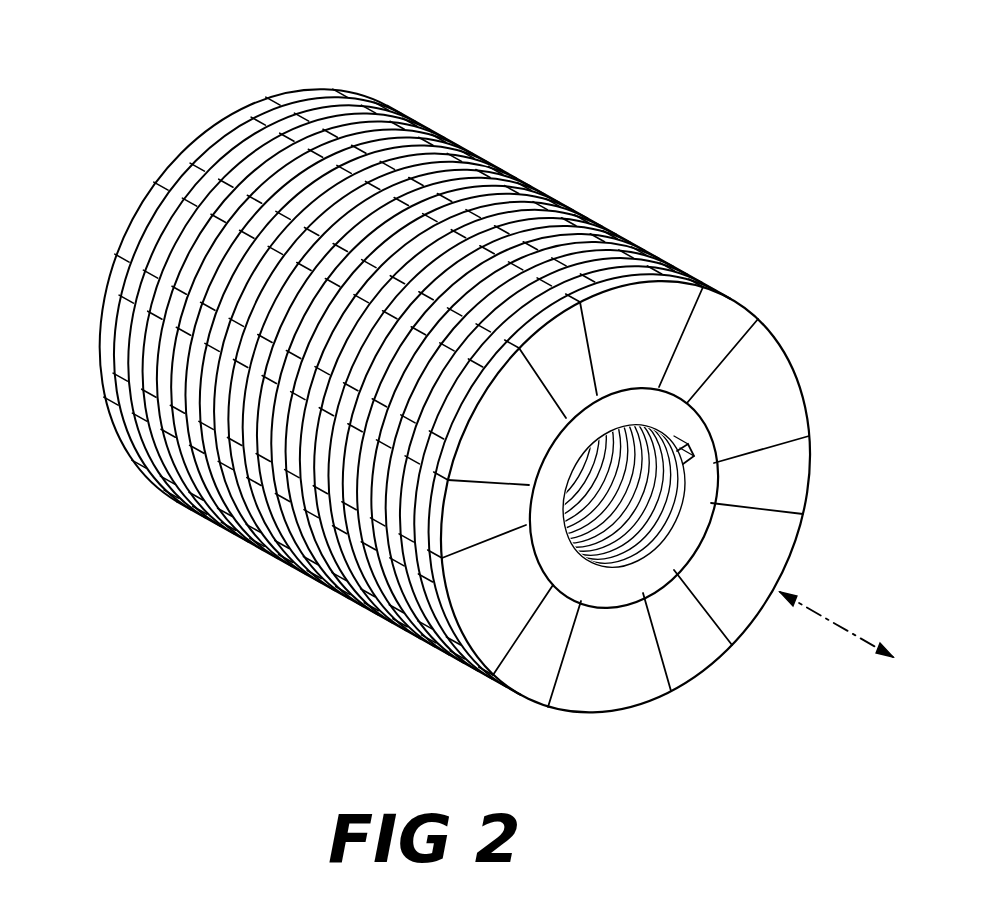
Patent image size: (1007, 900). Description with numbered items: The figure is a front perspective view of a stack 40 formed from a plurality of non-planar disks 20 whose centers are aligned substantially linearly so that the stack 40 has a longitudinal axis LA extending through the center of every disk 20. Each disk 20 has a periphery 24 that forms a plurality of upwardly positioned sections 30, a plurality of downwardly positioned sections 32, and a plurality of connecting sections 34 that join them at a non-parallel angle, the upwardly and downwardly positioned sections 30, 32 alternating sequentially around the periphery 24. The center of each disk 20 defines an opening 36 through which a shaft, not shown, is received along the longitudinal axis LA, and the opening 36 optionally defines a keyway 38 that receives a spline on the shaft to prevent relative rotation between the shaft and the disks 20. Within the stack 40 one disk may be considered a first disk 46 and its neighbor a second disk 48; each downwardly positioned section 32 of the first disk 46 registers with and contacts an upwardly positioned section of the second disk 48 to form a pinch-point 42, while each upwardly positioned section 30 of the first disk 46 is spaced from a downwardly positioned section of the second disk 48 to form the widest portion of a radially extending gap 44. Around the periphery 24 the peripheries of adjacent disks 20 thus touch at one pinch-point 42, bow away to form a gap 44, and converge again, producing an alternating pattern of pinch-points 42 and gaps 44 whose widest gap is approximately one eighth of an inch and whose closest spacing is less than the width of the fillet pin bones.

The disk 20 is at (627, 677).
The periphery 24 is at (797, 534).
The upwardly positioned section 30 is at (510, 498).
The downwardly positioned section 32 is at (572, 395).
The connecting section 34 is at (473, 658).
The opening 36 is at (645, 498).
The keyway 38 is at (697, 450).
The stack 40 is at (621, 150).
The pinch-point 42 is at (233, 118).
The gap 44 is at (207, 140).
The first disk 46 is at (656, 372).
The second disk 48 is at (632, 290).
The longitudinal axis LA is at (822, 618).